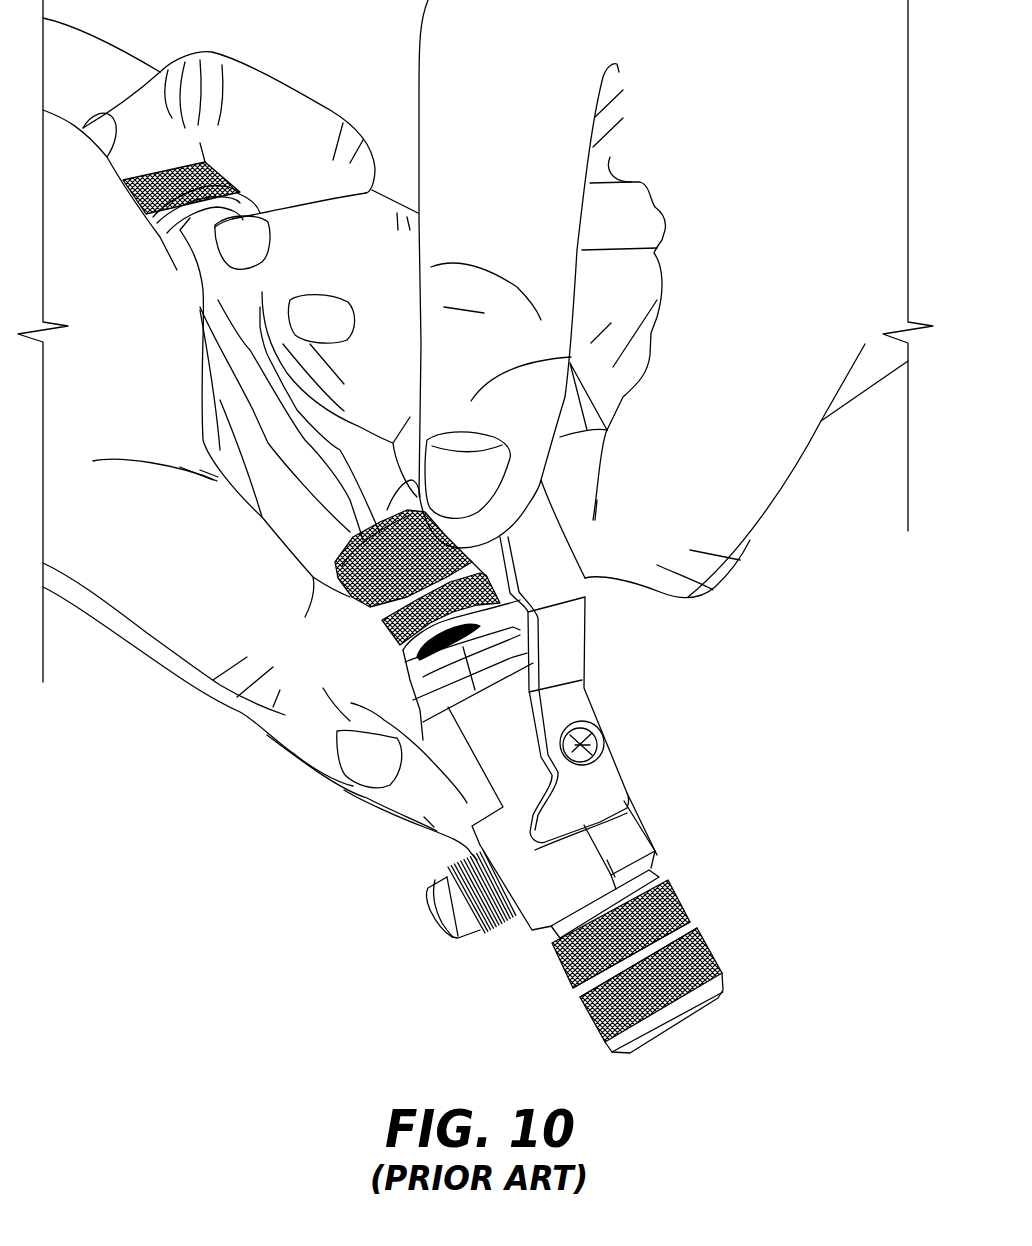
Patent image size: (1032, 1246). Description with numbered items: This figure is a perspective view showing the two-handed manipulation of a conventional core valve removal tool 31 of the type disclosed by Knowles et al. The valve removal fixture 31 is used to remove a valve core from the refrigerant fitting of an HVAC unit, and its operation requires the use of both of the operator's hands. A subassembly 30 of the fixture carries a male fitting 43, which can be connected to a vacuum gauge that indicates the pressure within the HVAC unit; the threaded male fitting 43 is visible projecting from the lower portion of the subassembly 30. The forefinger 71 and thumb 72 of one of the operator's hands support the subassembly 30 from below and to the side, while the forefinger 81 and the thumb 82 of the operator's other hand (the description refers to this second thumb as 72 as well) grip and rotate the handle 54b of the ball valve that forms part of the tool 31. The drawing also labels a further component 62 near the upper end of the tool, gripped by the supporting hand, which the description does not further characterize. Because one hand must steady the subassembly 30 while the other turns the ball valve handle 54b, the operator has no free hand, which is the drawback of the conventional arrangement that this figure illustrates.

The knurled nut 62 is at (197, 240).
The index finger 82 is at (512, 345).
The forefinger 81 is at (731, 536).
The handle 54b is at (560, 590).
The valve core removal tool 31 is at (700, 713).
The thumb 72 is at (272, 736).
The forefinger 71 is at (352, 770).
The subassembly 30 is at (465, 838).
The male fitting 43 is at (465, 940).